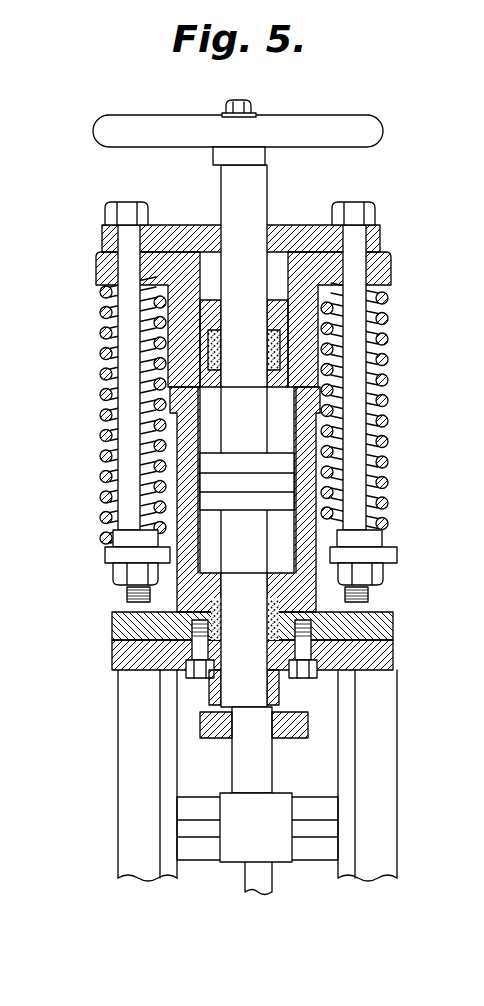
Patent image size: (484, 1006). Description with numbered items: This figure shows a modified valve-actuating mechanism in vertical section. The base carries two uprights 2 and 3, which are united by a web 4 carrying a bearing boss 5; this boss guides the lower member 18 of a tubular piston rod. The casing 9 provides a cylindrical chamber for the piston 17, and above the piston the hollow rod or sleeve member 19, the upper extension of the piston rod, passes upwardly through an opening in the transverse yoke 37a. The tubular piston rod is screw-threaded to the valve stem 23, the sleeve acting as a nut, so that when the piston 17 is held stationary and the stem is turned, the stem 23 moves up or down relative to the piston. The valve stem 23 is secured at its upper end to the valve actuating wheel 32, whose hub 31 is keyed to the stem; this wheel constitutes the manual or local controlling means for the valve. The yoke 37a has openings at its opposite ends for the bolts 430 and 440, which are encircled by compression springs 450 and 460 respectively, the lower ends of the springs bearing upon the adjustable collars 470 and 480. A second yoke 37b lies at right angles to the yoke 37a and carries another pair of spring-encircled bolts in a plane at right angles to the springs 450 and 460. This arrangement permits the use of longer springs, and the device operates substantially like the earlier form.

The valve actuating wheel 32 is at (160, 130).
The hub 31 is at (213, 153).
The yoke 37a is at (290, 232).
The bolt 440 is at (130, 298).
The bolt 430 is at (355, 292).
The compression spring 460 is at (106, 418).
The compression spring 450 is at (385, 383).
The adjustable collar 480 is at (113, 556).
The adjustable collar 470 is at (385, 553).
The casing 9 is at (347, 441).
The hollow rod or sleeve member 19 is at (244, 343).
The piston 17 is at (243, 480).
The lower member of the tubular piston rod 18 is at (245, 499).
The yoke 37b is at (210, 738).
The web 4 is at (313, 797).
The bearing boss 5 is at (240, 855).
The upright 3 is at (133, 815).
The upright 2 is at (388, 815).
The valve stem 23 is at (260, 885).